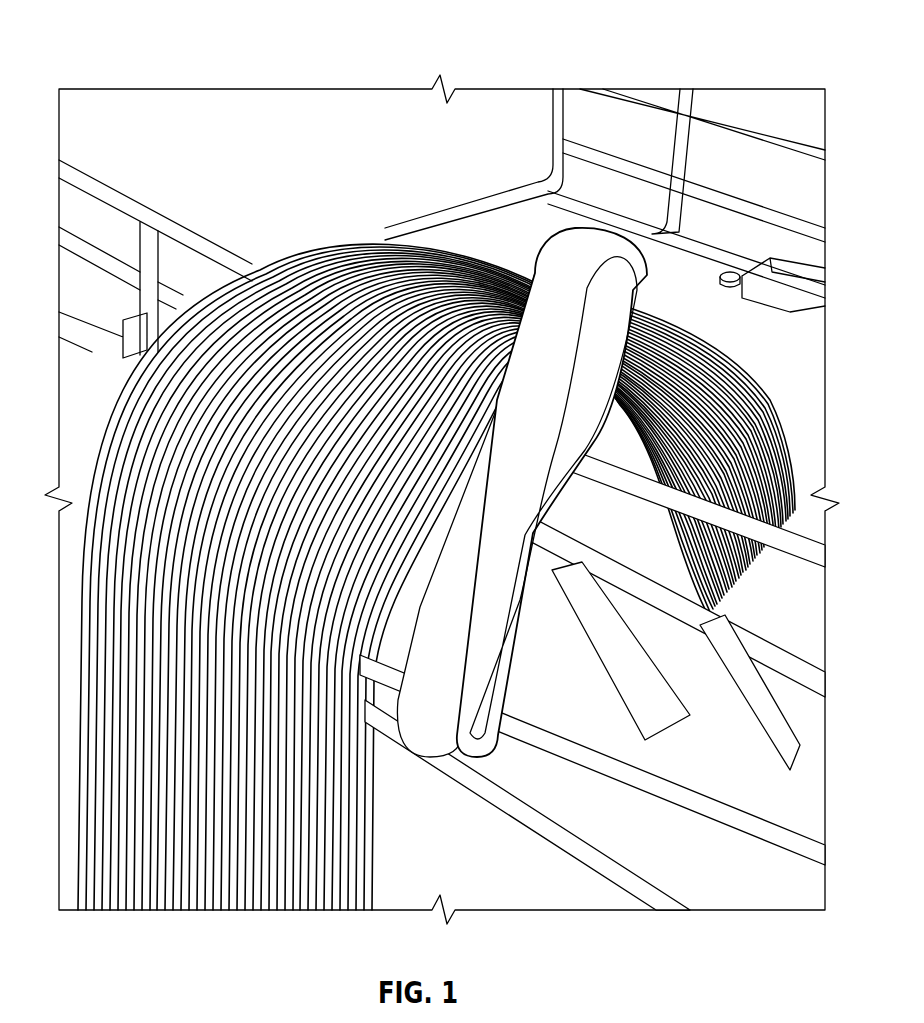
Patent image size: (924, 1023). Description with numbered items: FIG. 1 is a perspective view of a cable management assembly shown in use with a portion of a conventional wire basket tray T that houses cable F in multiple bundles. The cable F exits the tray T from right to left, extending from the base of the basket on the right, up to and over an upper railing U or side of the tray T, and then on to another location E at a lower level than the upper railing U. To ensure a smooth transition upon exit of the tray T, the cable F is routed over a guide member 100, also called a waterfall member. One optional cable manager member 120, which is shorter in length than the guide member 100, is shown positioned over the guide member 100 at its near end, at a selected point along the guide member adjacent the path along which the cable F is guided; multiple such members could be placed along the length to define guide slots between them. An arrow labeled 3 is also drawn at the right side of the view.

The guide member 100 is at (625, 338).
The cable manager member 120 is at (586, 236).
The wire basket tray T is at (158, 198).
The upper railing U is at (217, 250).
The cable F is at (307, 245).
The another location E is at (70, 822).
The view indicator 3 is at (840, 728).